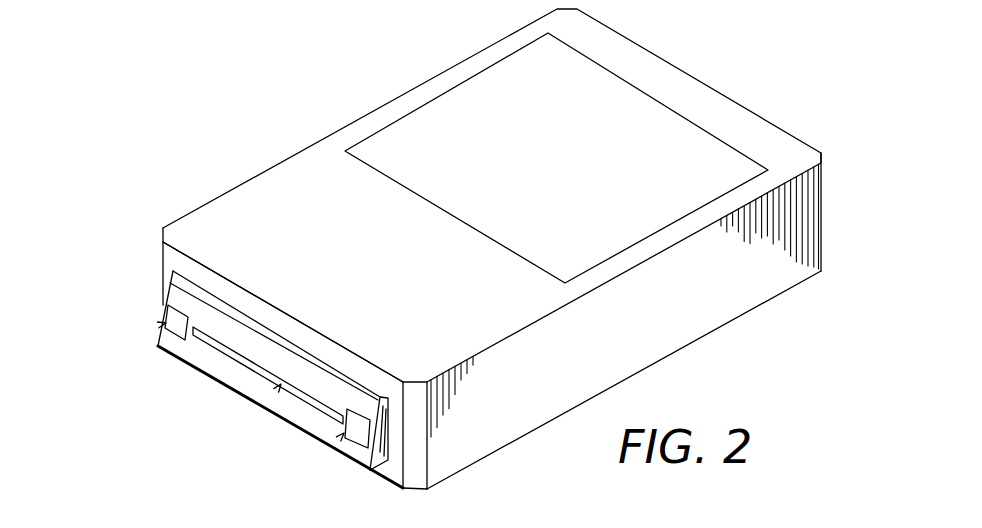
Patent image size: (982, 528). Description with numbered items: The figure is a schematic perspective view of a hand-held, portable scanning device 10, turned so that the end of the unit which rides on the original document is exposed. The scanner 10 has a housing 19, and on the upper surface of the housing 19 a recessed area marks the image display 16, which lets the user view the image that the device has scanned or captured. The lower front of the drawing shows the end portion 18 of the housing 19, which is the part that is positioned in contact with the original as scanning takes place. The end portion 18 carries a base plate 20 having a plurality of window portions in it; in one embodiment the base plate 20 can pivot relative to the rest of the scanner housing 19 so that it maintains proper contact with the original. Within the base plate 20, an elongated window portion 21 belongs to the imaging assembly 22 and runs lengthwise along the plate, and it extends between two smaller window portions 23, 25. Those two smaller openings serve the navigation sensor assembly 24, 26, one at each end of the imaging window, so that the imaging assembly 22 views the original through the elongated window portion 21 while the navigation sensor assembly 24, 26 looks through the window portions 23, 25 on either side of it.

The hand-held portable scanning device 10 is at (280, 202).
The image display 16 is at (467, 122).
The end portion 18 is at (168, 260).
The housing 19 is at (647, 333).
The base plate 20 is at (230, 378).
The elongated window portion 21 is at (207, 342).
The imaging assembly 22 is at (281, 384).
The window portion 23 is at (165, 303).
The navigation sensor assembly 24 is at (166, 323).
The window portion 25 is at (360, 421).
The navigation sensor assembly 26 is at (344, 433).